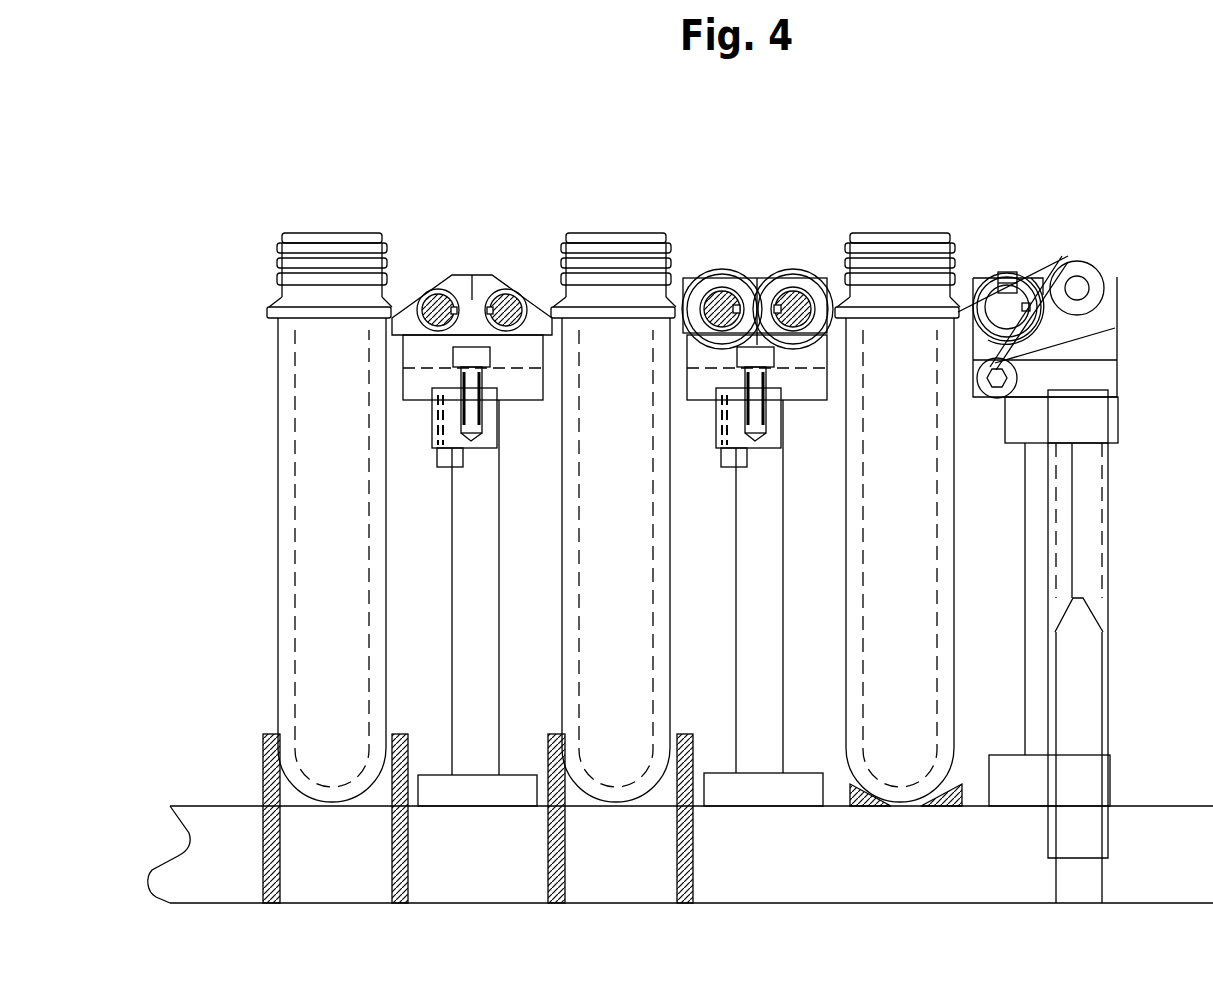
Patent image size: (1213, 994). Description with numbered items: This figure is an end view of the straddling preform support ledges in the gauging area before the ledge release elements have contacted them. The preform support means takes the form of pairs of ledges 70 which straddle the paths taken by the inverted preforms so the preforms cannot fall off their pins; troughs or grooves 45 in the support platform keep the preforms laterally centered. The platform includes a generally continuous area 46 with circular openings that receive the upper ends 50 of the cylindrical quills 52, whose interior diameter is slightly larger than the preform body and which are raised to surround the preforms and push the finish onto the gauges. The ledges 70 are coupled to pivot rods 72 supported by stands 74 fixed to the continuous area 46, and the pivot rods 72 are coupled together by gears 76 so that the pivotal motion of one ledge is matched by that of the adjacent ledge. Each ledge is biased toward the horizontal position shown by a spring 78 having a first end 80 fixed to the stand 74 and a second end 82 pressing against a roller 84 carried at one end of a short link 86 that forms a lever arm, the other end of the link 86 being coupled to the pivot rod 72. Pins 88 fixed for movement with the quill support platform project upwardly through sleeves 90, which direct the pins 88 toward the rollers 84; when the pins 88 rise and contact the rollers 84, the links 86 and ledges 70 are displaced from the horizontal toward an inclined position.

The troughs or grooves 45 is at (850, 785).
The generally continuous area 46 is at (492, 877).
The upper ends of cylindrical quills 50 is at (684, 730).
The cylindrical quills 52 is at (406, 768).
The ledges 70 is at (403, 300).
The pivot rods 72 is at (443, 289).
The stands 74 is at (463, 583).
The gears 76 is at (724, 269).
The springs 78 is at (1010, 268).
The first end of spring 80 is at (1010, 364).
The second end of spring 82 is at (1063, 256).
The roller 84 is at (1088, 272).
The short link 86 is at (1073, 320).
The pins 88 is at (1083, 690).
The sleeves 90 is at (1103, 545).